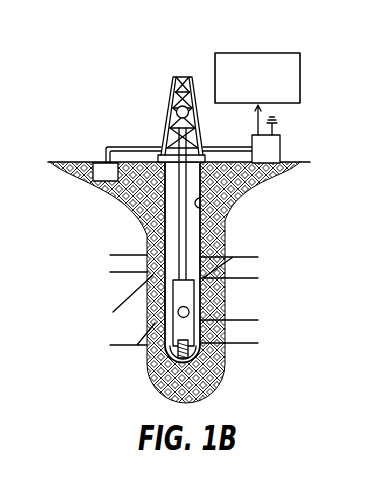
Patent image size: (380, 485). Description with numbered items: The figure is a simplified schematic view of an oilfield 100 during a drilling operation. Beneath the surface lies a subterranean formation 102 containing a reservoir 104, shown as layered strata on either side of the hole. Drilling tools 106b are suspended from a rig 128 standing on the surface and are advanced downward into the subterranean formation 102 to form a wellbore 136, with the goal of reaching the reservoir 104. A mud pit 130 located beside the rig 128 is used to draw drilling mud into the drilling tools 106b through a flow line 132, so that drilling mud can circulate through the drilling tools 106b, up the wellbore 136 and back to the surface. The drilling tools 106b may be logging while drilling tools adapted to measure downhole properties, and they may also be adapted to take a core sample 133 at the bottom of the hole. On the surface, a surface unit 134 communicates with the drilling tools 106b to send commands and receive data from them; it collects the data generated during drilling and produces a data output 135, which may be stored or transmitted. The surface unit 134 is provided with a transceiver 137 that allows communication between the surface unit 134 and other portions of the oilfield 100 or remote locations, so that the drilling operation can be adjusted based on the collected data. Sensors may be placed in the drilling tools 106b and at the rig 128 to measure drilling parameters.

The oilfield 100 is at (115, 87).
The subterranean formation 102 is at (238, 246).
The reservoir 104 is at (262, 303).
The drilling tools 106b is at (175, 300).
The rig 128 is at (165, 118).
The mud pit 130 is at (108, 184).
The flow line 132 is at (106, 148).
The core sample 133 is at (162, 352).
The surface unit 134 is at (281, 153).
The data output 135 is at (280, 53).
The wellbore 136 is at (205, 210).
The transceiver 137 is at (278, 126).